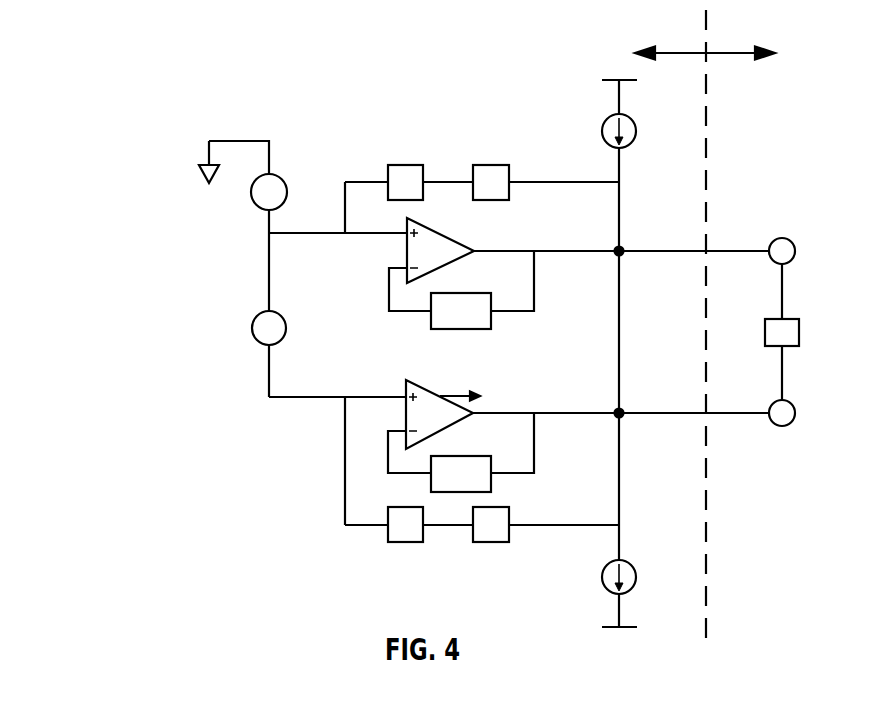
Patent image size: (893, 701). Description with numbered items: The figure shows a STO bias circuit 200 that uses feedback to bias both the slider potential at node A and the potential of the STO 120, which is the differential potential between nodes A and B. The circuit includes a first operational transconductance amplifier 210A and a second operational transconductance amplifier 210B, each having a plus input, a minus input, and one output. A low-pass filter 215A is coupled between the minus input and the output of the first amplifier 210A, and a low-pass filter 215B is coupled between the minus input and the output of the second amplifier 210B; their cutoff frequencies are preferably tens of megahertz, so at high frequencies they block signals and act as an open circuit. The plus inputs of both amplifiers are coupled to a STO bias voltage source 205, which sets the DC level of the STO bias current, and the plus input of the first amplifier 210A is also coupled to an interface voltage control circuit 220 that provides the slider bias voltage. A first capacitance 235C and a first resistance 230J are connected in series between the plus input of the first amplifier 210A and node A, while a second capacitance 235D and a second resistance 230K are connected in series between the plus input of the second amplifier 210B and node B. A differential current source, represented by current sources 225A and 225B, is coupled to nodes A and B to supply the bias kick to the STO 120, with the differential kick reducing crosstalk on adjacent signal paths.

The STO bias circuit 200 is at (106, 210).
The interface voltage control (IVC) circuit 220 is at (251, 192).
The STO bias voltage source 205 is at (252, 328).
The first capacitance 235C is at (407, 165).
The first resistance 230J is at (490, 165).
The second capacitance 235D is at (405, 542).
The second resistance 230K is at (490, 542).
The first operational transconductance amplifier 210A is at (440, 231).
The low-pass filter 215A is at (455, 329).
The second operational transconductance amplifier 210B is at (412, 381).
The low-pass filter 215B is at (457, 456).
The current source 225A is at (637, 132).
The current source 225B is at (637, 578).
The STO 120 is at (799, 334).